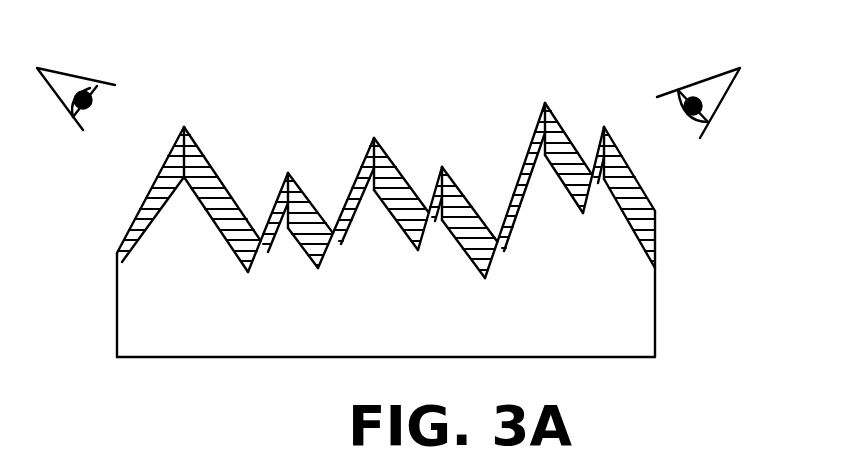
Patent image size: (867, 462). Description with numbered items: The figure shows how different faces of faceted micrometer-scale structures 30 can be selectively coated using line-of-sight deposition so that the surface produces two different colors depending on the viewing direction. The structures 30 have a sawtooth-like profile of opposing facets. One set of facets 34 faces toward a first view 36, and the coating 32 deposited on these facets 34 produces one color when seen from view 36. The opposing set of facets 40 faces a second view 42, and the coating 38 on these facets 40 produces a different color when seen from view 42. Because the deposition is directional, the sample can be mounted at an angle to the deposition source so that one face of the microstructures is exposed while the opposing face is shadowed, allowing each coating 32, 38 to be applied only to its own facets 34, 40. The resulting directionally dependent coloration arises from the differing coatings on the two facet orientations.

The faceted micrometer-scale structures 30 is at (432, 333).
The coating 32 is at (142, 215).
The facets 34 is at (143, 241).
The view 36 is at (90, 82).
The coating 38 is at (645, 192).
The facets 40 is at (646, 240).
The view 42 is at (710, 77).